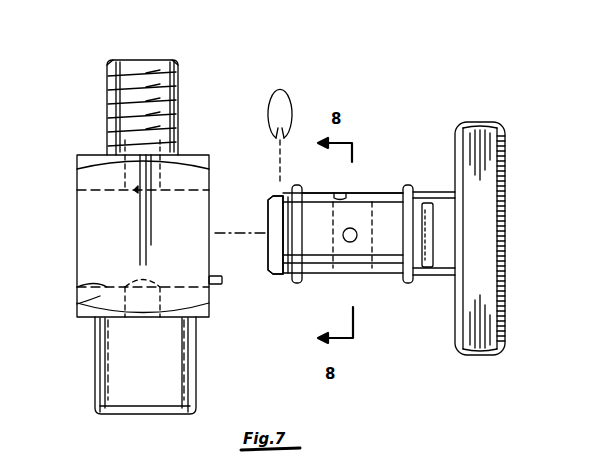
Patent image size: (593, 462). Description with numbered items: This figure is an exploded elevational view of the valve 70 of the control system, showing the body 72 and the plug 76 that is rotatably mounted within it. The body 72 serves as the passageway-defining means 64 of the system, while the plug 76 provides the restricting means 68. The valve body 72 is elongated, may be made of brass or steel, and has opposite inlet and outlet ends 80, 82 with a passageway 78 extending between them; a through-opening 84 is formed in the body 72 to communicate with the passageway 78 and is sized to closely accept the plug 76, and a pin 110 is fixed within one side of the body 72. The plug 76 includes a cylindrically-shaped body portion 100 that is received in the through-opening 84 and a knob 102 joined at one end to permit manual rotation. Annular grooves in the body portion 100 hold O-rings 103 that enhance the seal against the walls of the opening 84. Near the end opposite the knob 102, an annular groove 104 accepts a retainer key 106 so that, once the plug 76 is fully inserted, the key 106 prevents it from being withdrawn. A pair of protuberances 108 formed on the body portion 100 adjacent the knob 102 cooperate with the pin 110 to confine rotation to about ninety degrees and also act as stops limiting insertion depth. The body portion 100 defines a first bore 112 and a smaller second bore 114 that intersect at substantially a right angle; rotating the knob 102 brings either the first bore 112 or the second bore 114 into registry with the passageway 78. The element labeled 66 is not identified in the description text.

The valve 70 is at (350, 75).
The body 72 is at (77, 237).
The flow passage bore 66 is at (130, 190).
The through-opening 84 is at (107, 287).
The passageway-defining means 64 is at (88, 297).
The passageway 78 is at (112, 91).
The outlet end 82 is at (107, 91).
The inlet end 80 is at (95, 363).
The pin 110 is at (216, 290).
The body portion 100 is at (381, 276).
The O-rings 103 is at (296, 283).
The annular groove 104 is at (284, 197).
The plug 76 is at (387, 194).
The first bore 112 is at (342, 195).
The second bore 114 is at (344, 240).
The protuberances 108 is at (427, 204).
The retainer key 106 is at (268, 107).
The restricting means 68 is at (509, 232).
The knob 102 is at (506, 298).